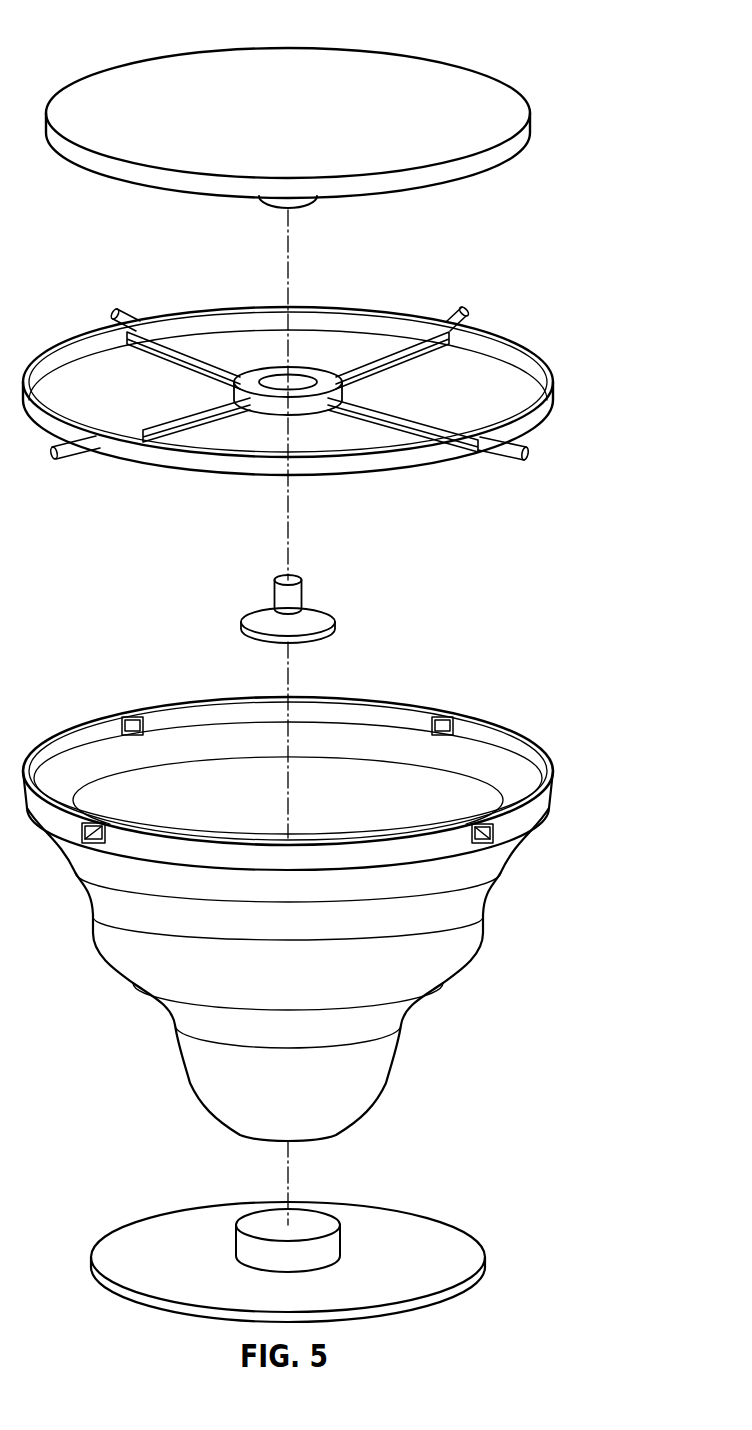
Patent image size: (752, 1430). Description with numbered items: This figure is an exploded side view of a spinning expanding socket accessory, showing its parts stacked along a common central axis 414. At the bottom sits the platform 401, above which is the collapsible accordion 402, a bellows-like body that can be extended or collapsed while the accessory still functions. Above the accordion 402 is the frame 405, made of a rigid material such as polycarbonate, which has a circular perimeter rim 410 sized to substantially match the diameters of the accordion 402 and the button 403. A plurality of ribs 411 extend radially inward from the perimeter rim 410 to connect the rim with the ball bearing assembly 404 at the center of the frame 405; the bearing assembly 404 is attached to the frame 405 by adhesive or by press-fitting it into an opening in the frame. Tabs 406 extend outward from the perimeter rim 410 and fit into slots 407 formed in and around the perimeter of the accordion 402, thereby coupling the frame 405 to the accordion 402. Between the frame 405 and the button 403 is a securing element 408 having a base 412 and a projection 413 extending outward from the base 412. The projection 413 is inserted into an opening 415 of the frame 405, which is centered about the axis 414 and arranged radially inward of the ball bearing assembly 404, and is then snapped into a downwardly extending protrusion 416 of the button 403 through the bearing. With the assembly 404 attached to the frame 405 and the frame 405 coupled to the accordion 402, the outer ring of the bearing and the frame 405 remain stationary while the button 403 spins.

The platform 401 is at (442, 1272).
The accordion 402 is at (448, 955).
The button 403 is at (413, 73).
The ball bearing assembly 404 is at (302, 376).
The frame 405 is at (555, 404).
The tabs 406 is at (527, 453).
The slots 407 is at (495, 832).
The securing element 408 is at (282, 618).
The perimeter rim 410 is at (175, 458).
The ribs 411 is at (175, 355).
The base 412 is at (317, 638).
The projection 413 is at (303, 598).
The axis 414 is at (285, 687).
The opening 415 is at (300, 395).
The downwardly extending protrusion 416 is at (300, 208).